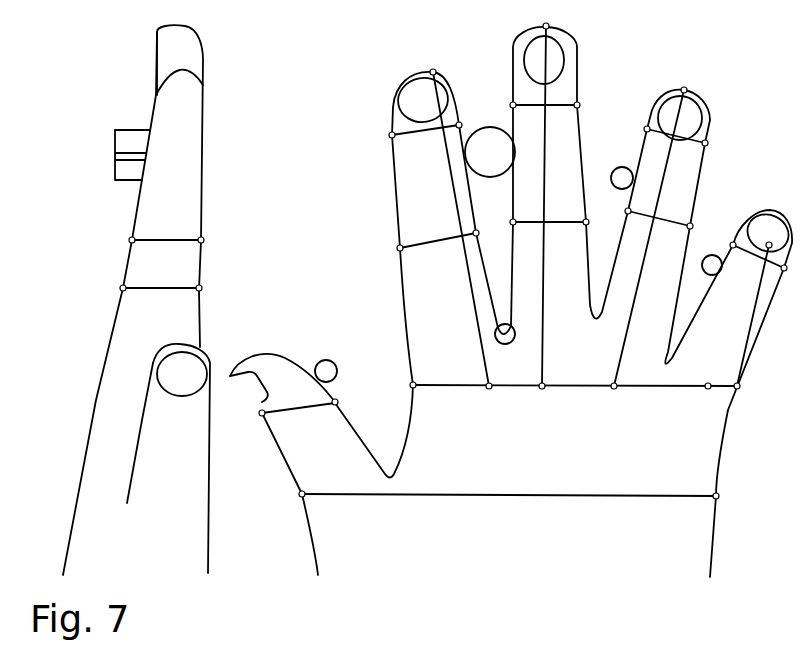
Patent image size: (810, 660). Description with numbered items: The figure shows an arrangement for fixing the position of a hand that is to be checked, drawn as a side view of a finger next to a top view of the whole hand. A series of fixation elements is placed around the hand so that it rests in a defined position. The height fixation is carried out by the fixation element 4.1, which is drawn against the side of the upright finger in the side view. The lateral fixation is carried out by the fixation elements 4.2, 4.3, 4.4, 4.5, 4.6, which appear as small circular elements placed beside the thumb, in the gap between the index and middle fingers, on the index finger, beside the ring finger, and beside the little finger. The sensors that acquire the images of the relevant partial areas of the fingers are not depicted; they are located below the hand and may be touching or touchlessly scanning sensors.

The fixation element 4.1 is at (130, 137).
The fixation element 4.2 is at (326, 371).
The fixation element 4.3 is at (506, 333).
The fixation element 4.4 is at (483, 158).
The fixation element 4.5 is at (621, 180).
The fixation element 4.6 is at (713, 262).